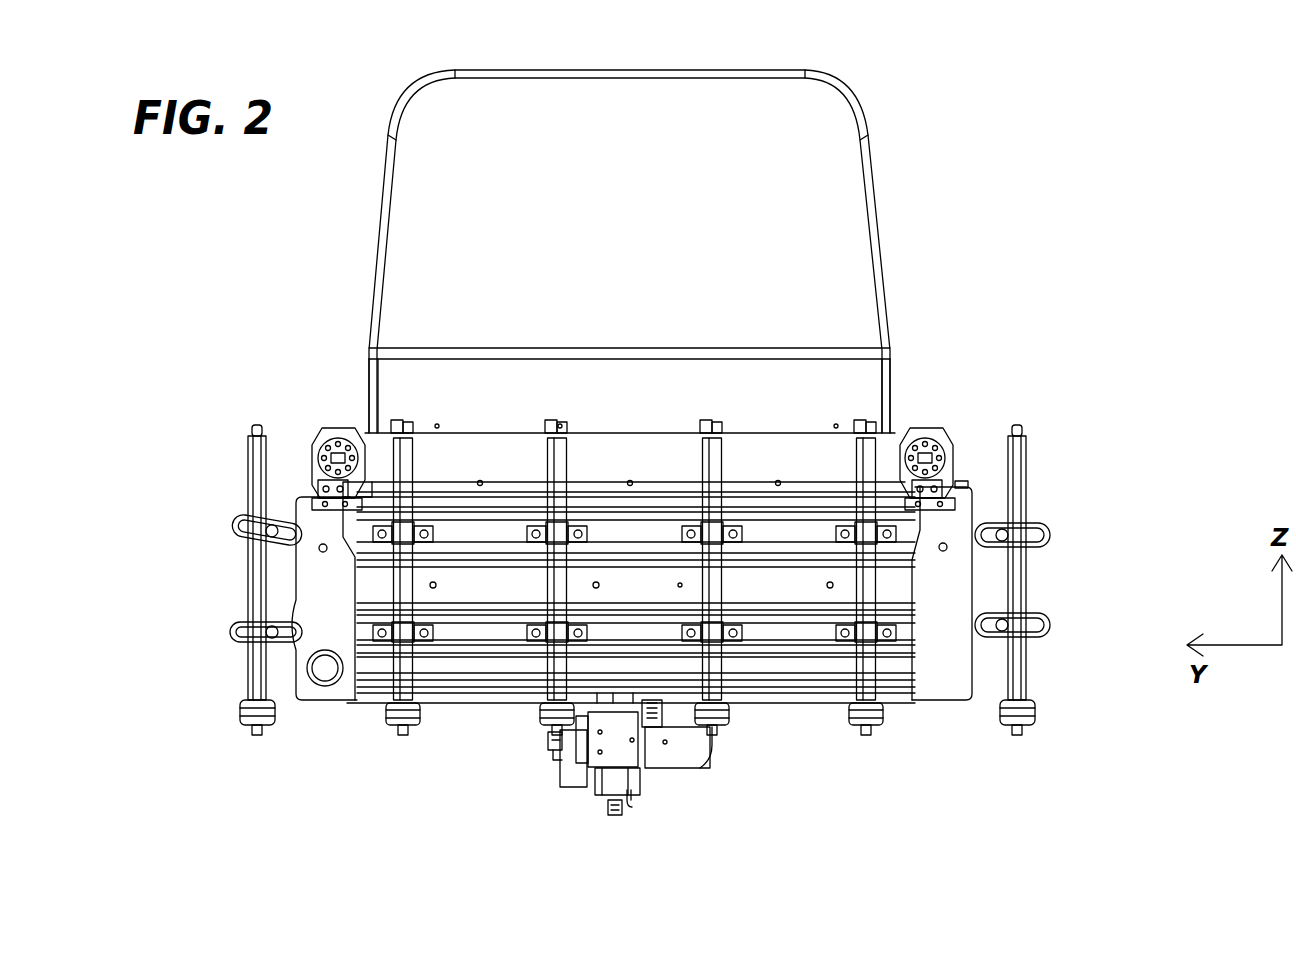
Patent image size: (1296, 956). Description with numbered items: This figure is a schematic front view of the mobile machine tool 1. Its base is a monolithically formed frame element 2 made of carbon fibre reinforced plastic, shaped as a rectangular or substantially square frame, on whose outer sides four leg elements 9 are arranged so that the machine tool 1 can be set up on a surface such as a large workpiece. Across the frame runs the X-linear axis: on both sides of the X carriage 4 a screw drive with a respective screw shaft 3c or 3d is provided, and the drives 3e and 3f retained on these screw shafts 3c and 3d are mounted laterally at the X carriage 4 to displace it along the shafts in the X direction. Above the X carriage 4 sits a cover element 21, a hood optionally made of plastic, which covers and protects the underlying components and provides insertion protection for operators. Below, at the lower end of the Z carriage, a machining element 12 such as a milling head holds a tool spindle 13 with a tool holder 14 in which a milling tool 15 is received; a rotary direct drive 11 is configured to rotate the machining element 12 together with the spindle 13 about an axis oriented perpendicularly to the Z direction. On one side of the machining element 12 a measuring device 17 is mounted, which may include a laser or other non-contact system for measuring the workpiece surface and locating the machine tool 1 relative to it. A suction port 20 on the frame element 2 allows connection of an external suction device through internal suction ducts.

The mobile machine tool 1 is at (966, 176).
The frame element 2 is at (313, 586).
The screw shaft 3c is at (307, 440).
The screw shaft 3d is at (940, 457).
The drive 3e is at (327, 438).
The drive 3f is at (945, 432).
The X carriage 4 is at (805, 452).
The leg elements 9 is at (248, 560).
The rotary direct drive 11 is at (683, 752).
The machining element 12 is at (622, 755).
The tool spindle 13 is at (602, 780).
The tool holder 14 is at (614, 808).
The milling tool 15 is at (622, 805).
The measuring device 17 is at (573, 747).
The suction port 20 is at (318, 672).
The cover element 21 is at (833, 137).